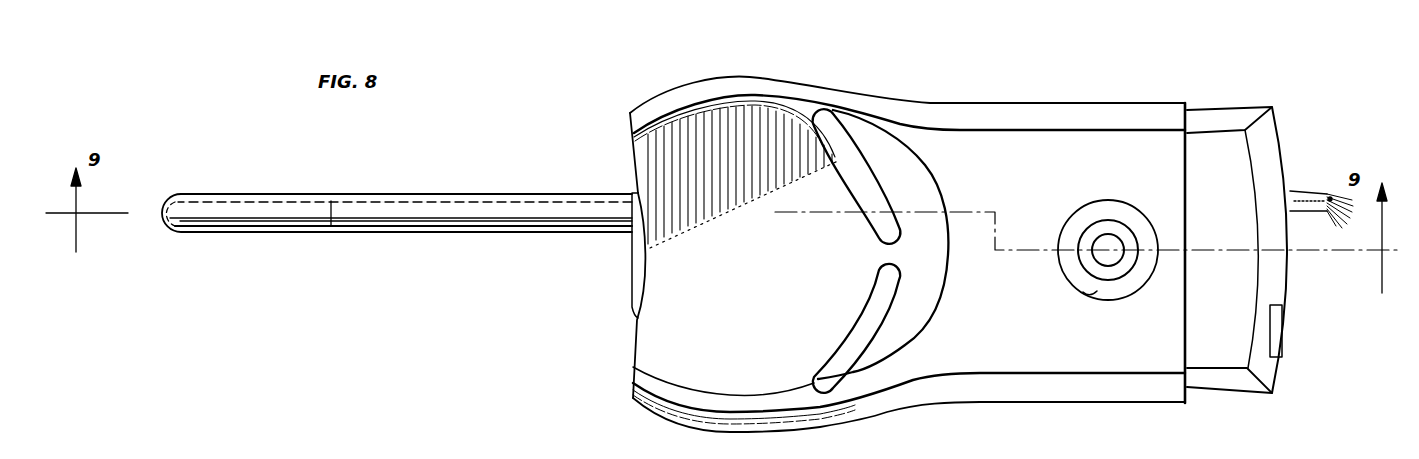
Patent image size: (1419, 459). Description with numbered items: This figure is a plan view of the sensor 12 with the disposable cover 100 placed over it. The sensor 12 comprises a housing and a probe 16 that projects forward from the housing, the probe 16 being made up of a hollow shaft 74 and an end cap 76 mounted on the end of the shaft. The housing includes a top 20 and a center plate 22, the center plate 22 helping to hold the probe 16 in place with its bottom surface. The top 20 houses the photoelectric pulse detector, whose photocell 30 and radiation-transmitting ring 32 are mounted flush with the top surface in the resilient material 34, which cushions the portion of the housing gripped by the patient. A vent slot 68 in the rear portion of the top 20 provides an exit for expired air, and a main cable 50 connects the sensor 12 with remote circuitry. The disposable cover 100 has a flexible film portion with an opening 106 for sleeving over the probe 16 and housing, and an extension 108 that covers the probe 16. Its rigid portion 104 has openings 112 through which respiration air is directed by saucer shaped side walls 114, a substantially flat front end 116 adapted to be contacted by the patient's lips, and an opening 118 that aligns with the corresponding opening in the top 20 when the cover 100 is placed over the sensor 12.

The sensor 12 is at (1234, 97).
The probe 16 is at (386, 238).
The top 20 is at (1228, 196).
The center plate 22 is at (637, 274).
The photocell 30 is at (1118, 240).
The radiation-transmitting ring 32 is at (1140, 274).
The resilient material 34 is at (1073, 228).
The main cable 50 is at (1300, 192).
The vent slot 68 is at (1283, 330).
The hollow shaft 74 is at (525, 200).
The end cap 76 is at (239, 198).
The disposable cover 100 is at (610, 108).
The rigid portion 104 is at (1092, 140).
The opening 106 is at (1190, 340).
The extension 108 is at (418, 194).
The openings 112 is at (877, 273).
The saucer shaped side walls 114 is at (745, 104).
The front end 116 is at (653, 328).
The opening 118 is at (1090, 290).